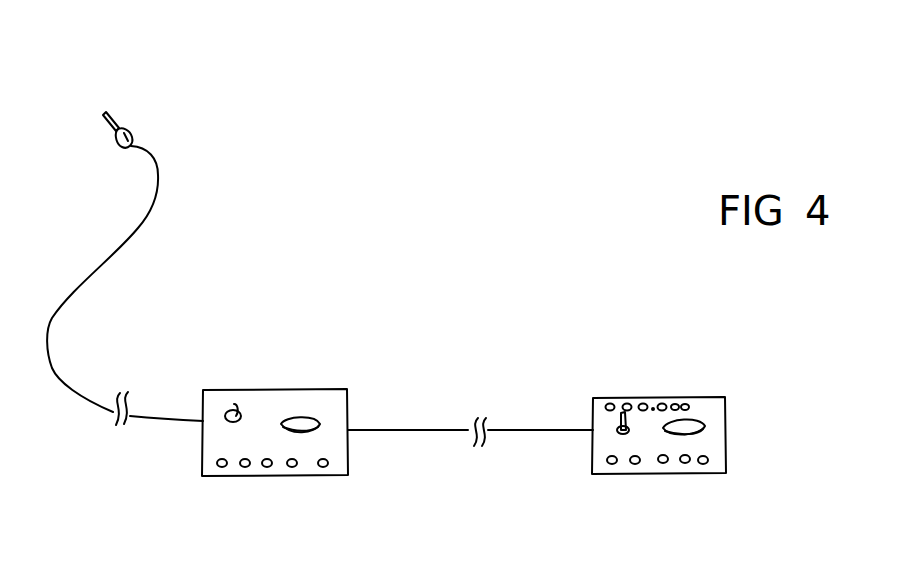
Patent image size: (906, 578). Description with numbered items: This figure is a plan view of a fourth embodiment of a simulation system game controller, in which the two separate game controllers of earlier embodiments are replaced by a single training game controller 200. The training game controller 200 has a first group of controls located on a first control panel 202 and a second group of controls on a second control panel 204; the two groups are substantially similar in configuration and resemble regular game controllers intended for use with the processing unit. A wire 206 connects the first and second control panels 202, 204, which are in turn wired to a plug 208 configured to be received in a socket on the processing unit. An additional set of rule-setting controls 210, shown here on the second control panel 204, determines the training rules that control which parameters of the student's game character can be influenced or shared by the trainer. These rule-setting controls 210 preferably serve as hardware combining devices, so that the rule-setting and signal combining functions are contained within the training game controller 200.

The training game controller 200 is at (433, 227).
The first control panel 202 is at (277, 403).
The second control panel 204 is at (710, 408).
The wire 206 is at (428, 432).
The plug 208 is at (130, 132).
The rule-setting controls 210 is at (627, 402).